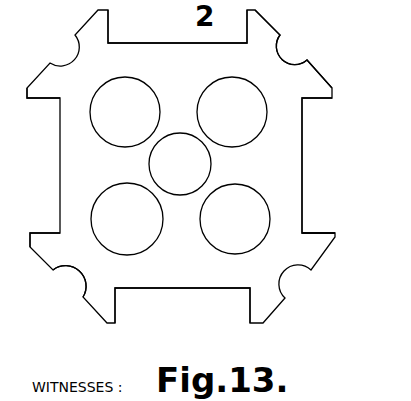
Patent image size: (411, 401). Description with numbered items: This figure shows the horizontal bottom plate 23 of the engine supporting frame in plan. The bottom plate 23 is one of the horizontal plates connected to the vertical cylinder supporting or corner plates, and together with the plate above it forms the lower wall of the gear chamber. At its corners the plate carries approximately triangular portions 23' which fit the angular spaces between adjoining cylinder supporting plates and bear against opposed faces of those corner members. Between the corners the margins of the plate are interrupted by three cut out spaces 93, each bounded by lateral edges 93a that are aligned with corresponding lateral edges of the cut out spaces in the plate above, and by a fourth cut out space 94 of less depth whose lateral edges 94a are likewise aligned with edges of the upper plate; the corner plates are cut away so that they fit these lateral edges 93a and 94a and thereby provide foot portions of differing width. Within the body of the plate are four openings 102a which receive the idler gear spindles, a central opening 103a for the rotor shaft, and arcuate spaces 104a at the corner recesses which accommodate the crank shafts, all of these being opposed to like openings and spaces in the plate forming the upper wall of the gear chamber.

The bottom plate 23 is at (182, 166).
The triangular portion 23' is at (306, 49).
The cut out spaces 93 is at (157, 32).
The lateral edges 93a is at (315, 233).
The cut out space 94 is at (37, 160).
The lateral edges 94a is at (40, 233).
The openings 102a is at (245, 193).
The opening 103a is at (212, 165).
The arcuate spaces 104a is at (78, 272).